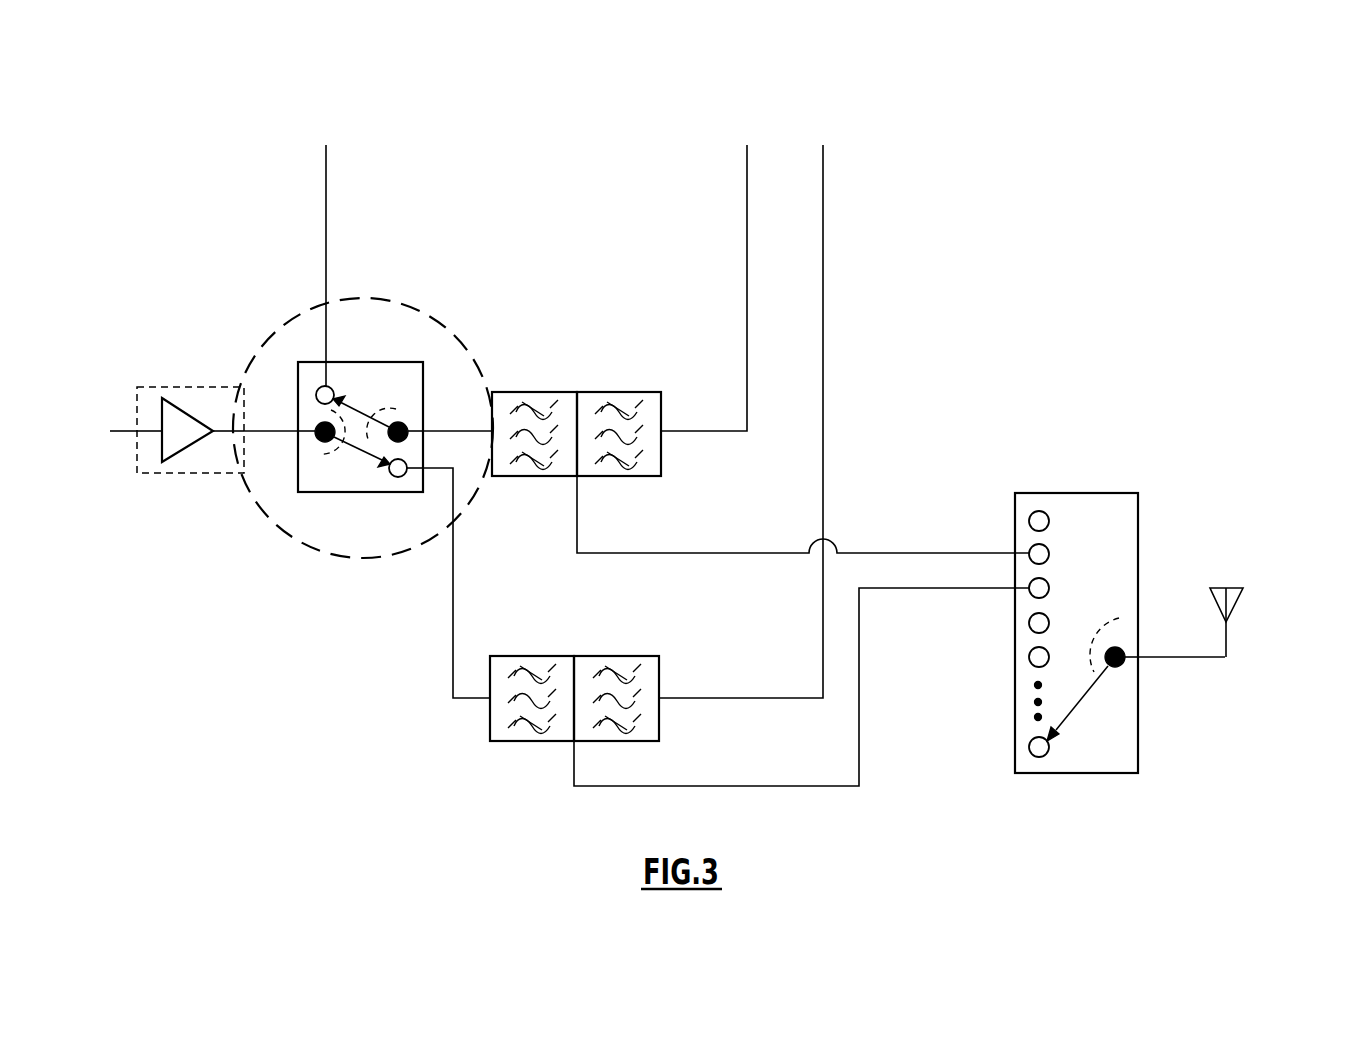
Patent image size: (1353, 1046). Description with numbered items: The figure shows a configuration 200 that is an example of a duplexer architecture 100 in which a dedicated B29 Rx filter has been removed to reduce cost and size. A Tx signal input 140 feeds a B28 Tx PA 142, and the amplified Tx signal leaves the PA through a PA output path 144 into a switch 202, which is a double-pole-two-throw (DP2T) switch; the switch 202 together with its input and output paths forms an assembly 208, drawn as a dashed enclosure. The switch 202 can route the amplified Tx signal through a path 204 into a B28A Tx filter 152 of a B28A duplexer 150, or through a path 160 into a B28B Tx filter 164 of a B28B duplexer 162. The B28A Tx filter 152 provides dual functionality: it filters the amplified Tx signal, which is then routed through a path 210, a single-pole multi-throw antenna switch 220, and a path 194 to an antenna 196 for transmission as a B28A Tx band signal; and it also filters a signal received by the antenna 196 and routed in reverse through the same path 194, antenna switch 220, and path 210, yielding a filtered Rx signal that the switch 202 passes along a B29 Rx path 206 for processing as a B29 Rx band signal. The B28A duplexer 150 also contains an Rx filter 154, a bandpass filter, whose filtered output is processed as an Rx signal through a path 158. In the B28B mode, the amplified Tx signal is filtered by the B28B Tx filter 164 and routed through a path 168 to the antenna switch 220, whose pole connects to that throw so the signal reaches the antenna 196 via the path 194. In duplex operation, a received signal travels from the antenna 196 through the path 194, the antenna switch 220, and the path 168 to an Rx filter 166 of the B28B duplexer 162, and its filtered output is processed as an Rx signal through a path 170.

The duplexer architecture 100 is at (578, 115).
The configuration 200 is at (449, 150).
The Tx signal input 140 is at (122, 430).
The B28 Tx PA 142 is at (163, 473).
The PA output path 144 is at (272, 425).
The switch 202 is at (340, 492).
The path into B28A Tx filter 204 is at (463, 428).
The B29 Rx path 206 is at (326, 240).
The assembly 208 is at (404, 299).
The B28A duplexer 150 is at (598, 431).
The B28A Tx filter 152 is at (540, 476).
The Rx filter 154 is at (650, 392).
The path 158 is at (747, 249).
The path 210 is at (738, 553).
The path into B28B Tx filter 160 is at (453, 653).
The B28B duplexer 162 is at (552, 702).
The B28B Tx filter 164 is at (490, 725).
The Rx filter 166 is at (648, 656).
The path 168 is at (774, 786).
The path 170 is at (727, 698).
The path 194 is at (1203, 657).
The antenna 196 is at (1240, 633).
The SP(N-1)T antenna switch 220 is at (1094, 773).